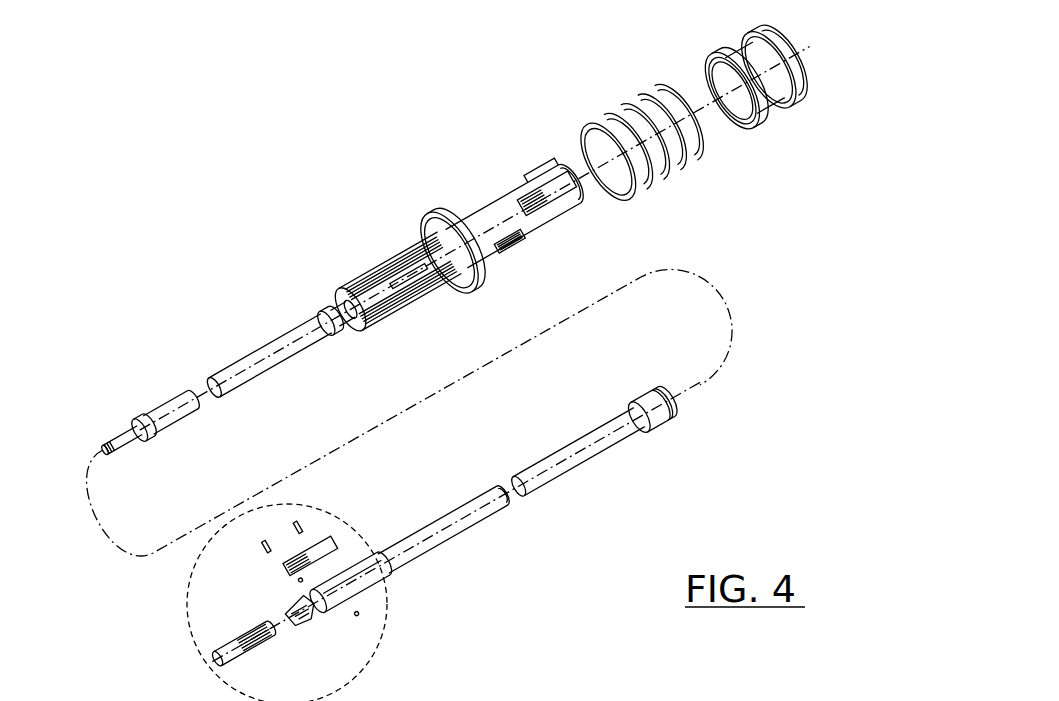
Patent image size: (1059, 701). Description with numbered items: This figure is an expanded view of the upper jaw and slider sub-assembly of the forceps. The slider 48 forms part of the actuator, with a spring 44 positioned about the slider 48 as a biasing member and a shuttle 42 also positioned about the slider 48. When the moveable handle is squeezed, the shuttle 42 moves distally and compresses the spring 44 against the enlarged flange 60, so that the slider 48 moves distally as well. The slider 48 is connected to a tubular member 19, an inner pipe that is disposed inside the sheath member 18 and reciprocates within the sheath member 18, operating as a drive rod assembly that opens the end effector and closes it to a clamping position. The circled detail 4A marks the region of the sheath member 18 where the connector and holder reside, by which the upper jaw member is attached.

The tubular member 19 is at (224, 366).
The enlarged flange 60 is at (438, 210).
The slider 48 is at (553, 231).
The spring 44 is at (677, 167).
The shuttle 42 is at (758, 130).
The sheath member 18 is at (470, 533).
The detail view 4A is at (387, 623).